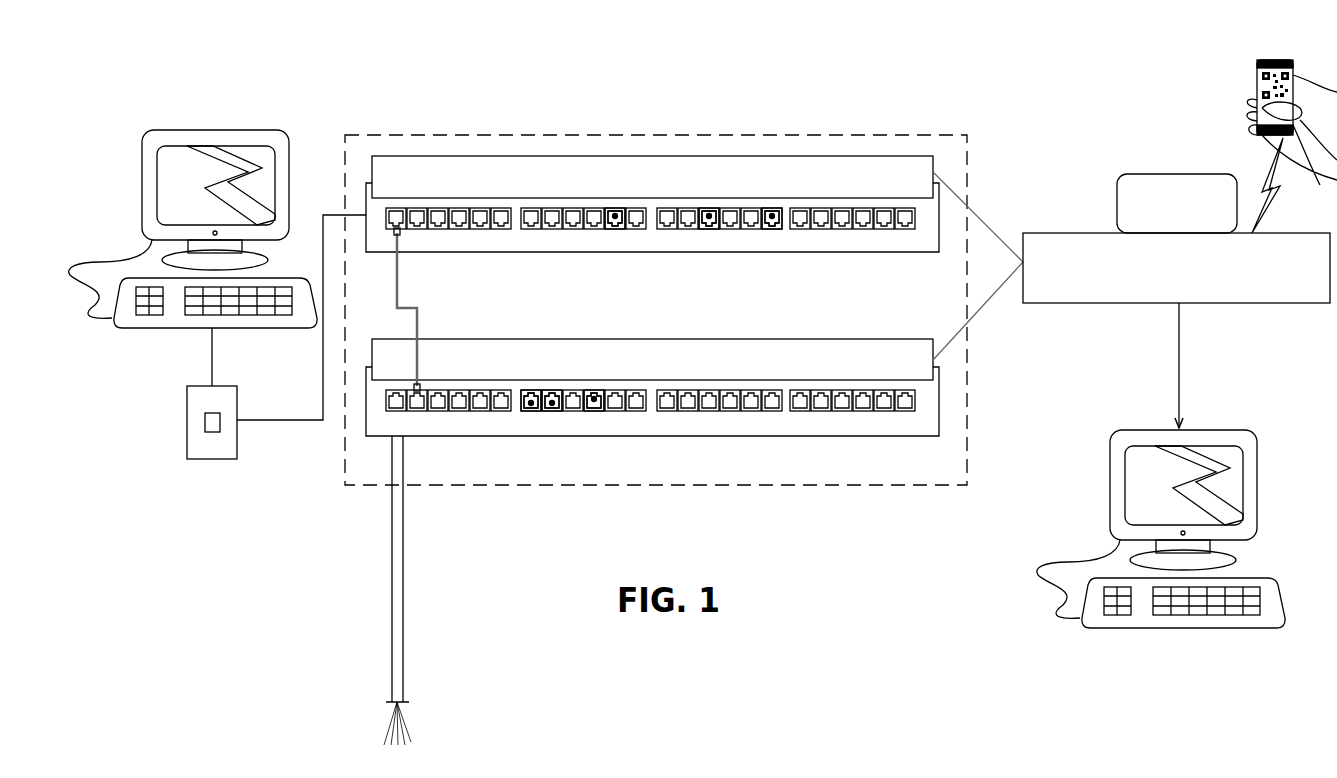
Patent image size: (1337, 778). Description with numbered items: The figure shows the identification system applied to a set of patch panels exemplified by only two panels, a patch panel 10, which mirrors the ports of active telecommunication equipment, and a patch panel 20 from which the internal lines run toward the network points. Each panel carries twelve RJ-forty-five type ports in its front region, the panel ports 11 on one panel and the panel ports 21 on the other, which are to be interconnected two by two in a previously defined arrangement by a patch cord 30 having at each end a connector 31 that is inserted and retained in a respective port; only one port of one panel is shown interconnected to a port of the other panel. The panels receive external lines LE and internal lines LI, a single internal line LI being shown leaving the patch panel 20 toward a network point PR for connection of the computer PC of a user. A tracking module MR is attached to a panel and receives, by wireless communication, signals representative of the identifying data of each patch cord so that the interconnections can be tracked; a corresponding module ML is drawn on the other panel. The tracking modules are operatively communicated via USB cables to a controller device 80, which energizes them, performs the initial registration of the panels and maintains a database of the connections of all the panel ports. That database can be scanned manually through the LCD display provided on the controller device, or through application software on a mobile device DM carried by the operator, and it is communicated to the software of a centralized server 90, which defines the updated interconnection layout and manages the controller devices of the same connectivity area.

The patch panel 10 is at (656, 337).
The panel ports 11 is at (594, 399).
The patch panel 20 is at (824, 253).
The panel ports 21 is at (772, 216).
The patch cord 30 is at (415, 327).
The connector 31 is at (401, 233).
The controller device 80 is at (1259, 306).
The centralized server 90 is at (1118, 424).
The computer PC is at (197, 123).
The network point PR is at (186, 423).
The internal line LI is at (291, 422).
The external line LE is at (406, 647).
The tracking module MR is at (652, 183).
The left module ML is at (647, 338).
The USB cable USB is at (984, 216).
The LCD display LCD is at (1136, 170).
The mobile device DM is at (1249, 73).